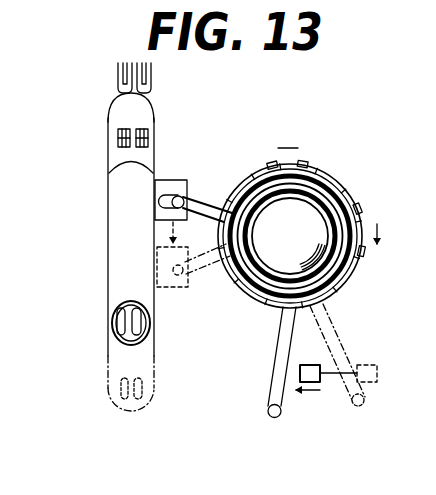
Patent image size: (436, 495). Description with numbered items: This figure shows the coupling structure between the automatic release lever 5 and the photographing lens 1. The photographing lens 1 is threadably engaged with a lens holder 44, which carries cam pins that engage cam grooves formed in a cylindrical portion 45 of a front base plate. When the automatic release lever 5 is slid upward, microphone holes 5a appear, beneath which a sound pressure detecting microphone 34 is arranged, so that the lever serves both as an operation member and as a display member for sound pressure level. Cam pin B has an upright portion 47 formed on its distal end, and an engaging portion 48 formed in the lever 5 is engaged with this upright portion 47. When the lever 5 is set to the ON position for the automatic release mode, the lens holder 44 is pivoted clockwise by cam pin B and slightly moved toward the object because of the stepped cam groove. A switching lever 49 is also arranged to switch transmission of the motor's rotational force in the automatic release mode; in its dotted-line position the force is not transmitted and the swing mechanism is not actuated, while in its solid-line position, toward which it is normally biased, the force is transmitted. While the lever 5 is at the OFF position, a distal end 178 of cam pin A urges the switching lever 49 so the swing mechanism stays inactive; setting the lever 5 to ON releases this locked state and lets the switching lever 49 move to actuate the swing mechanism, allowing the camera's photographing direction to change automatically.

The photographing lens 1 is at (324, 217).
The automatic release lever 5 is at (108, 232).
The microphone holes 5a is at (115, 388).
The microphone 34 is at (113, 334).
The lens holder 44 is at (320, 225).
The cylindrical portion of front base plate 45 is at (362, 202).
The upright portion 47 is at (184, 196).
The engaging portion 48 is at (165, 181).
The switching lever 49 is at (320, 382).
The distal end of cam pin A 178 is at (270, 388).